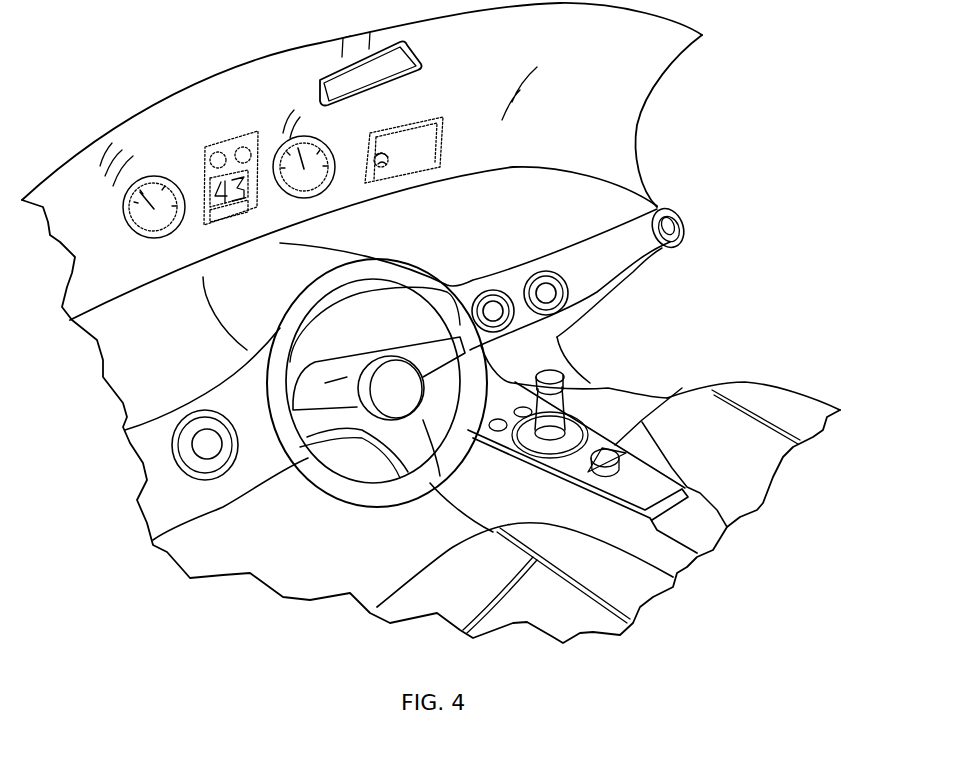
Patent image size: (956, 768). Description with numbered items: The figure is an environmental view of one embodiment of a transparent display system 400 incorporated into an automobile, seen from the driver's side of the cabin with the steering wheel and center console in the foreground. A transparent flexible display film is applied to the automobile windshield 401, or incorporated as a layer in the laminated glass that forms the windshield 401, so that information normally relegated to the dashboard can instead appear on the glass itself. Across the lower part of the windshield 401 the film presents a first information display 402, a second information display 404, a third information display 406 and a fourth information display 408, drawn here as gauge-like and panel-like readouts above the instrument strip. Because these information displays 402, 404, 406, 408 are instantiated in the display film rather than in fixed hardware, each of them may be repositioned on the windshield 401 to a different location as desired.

The transparent display system 400 is at (104, 60).
The automobile windshield 401 is at (630, 170).
The first information display 402 is at (132, 230).
The second information display 404 is at (335, 166).
The third information display 406 is at (213, 160).
The fourth information display 408 is at (440, 133).